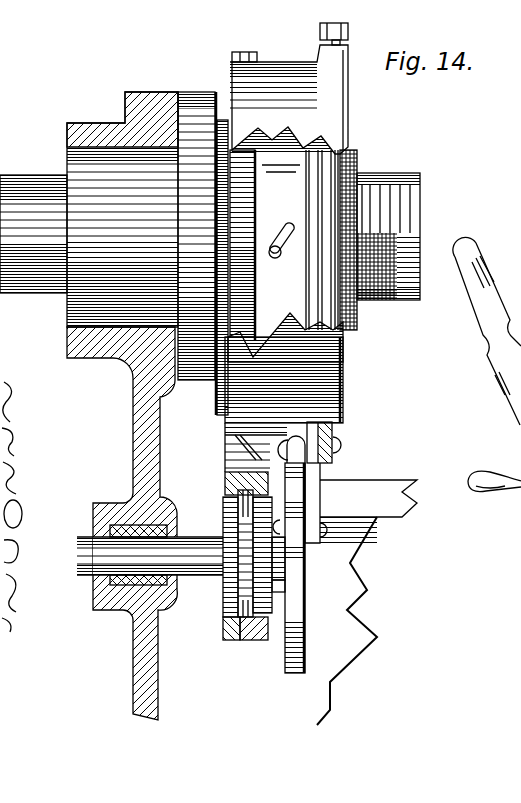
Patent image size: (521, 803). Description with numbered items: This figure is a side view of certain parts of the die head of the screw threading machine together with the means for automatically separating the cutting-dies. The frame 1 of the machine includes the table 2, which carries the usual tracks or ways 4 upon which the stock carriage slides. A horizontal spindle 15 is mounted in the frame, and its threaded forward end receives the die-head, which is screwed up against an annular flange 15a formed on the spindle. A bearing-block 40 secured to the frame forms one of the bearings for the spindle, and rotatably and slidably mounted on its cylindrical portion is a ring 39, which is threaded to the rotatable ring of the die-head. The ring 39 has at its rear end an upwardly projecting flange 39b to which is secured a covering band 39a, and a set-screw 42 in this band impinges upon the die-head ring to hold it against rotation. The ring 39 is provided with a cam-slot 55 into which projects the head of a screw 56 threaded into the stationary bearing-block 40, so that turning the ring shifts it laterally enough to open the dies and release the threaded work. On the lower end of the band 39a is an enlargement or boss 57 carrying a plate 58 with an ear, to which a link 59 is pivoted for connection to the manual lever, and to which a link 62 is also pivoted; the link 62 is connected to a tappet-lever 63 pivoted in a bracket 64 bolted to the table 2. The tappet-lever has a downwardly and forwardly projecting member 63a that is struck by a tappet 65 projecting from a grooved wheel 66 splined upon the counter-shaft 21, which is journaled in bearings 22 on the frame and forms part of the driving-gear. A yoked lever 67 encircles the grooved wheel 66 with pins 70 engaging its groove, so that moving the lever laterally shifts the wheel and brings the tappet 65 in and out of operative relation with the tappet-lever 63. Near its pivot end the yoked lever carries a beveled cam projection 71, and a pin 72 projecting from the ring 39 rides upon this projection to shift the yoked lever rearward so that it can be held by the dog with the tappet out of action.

The frame 1 is at (136, 403).
The table 2 is at (343, 665).
The tracks or ways 4 is at (390, 483).
The spindle 15 is at (24, 178).
The annular flange 15a is at (357, 317).
The counter-shaft 21 is at (100, 552).
The bearings 22 is at (93, 602).
The ring 39 is at (285, 256).
The covering band 39a is at (337, 100).
The upwardly projecting flange 39b is at (257, 185).
The bearing-block 40 is at (122, 209).
The set-screw 42 is at (349, 28).
The cam-slot 55 is at (280, 223).
The screw 56 is at (287, 260).
The enlargement or boss 57 is at (343, 412).
The plate 58 is at (230, 428).
The link 59 is at (335, 432).
The link 62 is at (340, 448).
The tappet-lever 63 is at (300, 550).
The downwardly and forwardly projecting member 63a is at (305, 625).
The bracket 64 is at (322, 473).
The tappet 65 is at (287, 593).
The grooved wheel 66 is at (267, 558).
The yoked lever 67 is at (255, 640).
The pins 70 is at (230, 498).
The cam projection 71 is at (232, 448).
The pin 72 is at (232, 467).